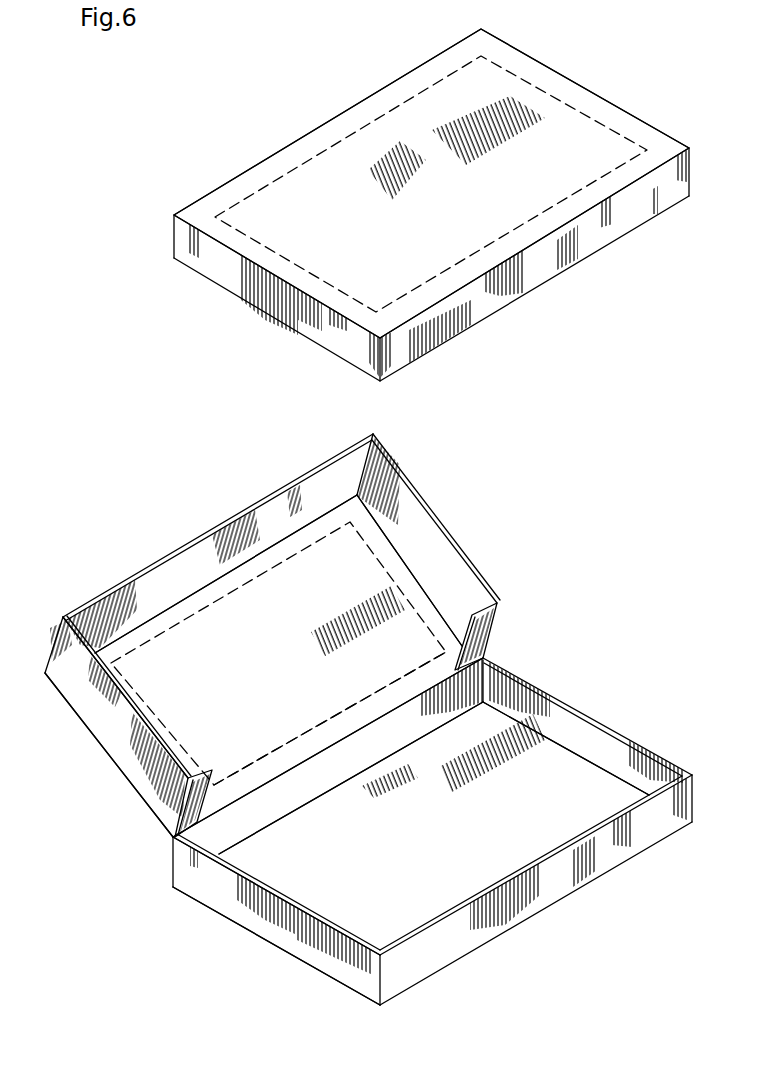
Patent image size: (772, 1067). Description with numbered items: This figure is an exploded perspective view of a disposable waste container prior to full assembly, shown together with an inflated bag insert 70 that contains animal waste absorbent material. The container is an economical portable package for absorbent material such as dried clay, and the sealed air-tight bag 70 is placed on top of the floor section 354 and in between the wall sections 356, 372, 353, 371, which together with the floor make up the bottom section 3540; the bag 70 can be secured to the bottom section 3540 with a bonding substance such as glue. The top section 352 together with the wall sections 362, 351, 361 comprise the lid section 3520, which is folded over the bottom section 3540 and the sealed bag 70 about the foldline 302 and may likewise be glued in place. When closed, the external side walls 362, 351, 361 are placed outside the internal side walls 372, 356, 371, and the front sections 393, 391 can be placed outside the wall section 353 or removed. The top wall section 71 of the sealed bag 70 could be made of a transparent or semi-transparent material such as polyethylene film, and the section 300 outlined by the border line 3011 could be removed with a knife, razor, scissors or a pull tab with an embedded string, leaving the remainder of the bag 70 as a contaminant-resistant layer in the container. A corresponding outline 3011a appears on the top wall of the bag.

The inflated bag insert 70 is at (691, 176).
The top wall section 71 is at (353, 220).
The recessed groove on lid top 3011a is at (589, 119).
The section 300 is at (194, 673).
The border line 3011 is at (229, 593).
The external side wall section 351 is at (337, 501).
The external side wall section 362 is at (427, 541).
The external side wall section 361 is at (82, 676).
The lid section 3520 is at (110, 722).
The front section 391 is at (173, 837).
The front section 393 is at (478, 636).
The foldline 302 is at (394, 708).
The top section 352 is at (324, 730).
The wall section 353 is at (322, 790).
The floor section 354 is at (426, 835).
The internal side wall section 372 is at (577, 738).
The internal side wall section 371 is at (225, 898).
The internal side wall section 356 is at (668, 831).
The bottom section 3540 is at (297, 928).